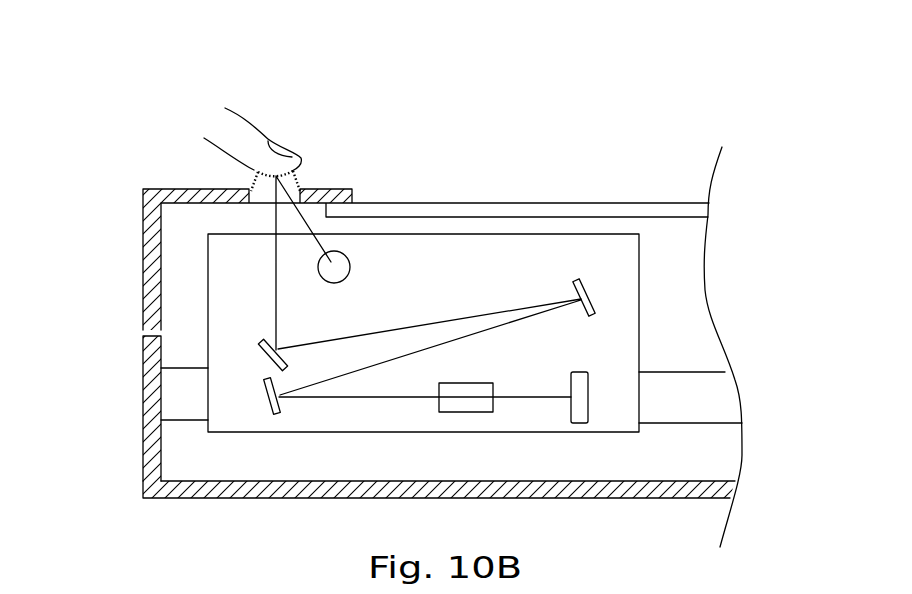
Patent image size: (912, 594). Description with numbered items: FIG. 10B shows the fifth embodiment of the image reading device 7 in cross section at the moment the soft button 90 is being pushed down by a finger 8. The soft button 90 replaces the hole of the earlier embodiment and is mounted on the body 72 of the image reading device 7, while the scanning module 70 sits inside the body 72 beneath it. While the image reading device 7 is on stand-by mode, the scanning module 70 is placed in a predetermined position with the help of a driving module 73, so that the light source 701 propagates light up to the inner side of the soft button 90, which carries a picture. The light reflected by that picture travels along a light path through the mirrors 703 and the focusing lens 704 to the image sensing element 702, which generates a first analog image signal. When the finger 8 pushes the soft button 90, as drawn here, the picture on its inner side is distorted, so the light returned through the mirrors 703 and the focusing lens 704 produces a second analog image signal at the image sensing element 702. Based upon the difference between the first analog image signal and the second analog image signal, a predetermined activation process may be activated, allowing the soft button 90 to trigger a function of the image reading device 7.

The image reading device 7 is at (541, 180).
The finger 8 is at (249, 140).
The soft button 90 is at (255, 177).
The scanning module 70 is at (382, 235).
The light source 701 is at (342, 252).
The image sensing element 702 is at (575, 415).
The mirror 703 is at (260, 342).
The focusing lens 704 is at (468, 405).
The body 72 is at (162, 443).
The driving module 73 is at (173, 397).